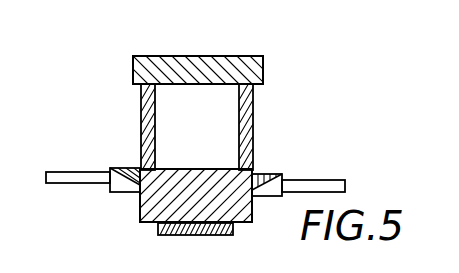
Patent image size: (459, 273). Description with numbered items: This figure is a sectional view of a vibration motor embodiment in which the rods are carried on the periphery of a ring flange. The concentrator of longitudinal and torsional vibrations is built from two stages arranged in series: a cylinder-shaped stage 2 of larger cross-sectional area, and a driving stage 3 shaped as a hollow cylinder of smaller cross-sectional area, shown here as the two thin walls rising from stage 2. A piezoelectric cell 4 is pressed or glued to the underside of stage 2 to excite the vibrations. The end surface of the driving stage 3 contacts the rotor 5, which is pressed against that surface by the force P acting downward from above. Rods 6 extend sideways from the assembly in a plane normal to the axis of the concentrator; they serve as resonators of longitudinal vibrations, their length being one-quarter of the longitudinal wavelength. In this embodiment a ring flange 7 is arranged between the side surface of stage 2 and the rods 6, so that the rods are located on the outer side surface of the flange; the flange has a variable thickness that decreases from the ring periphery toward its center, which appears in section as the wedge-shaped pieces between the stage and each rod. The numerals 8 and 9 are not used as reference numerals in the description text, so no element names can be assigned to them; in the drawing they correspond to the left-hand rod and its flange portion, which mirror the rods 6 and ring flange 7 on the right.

The force P is at (200, 22).
The rotor 5 is at (258, 72).
The driving stage 3 is at (253, 103).
The stage 2 is at (252, 214).
The piezoelectric cell 4 is at (233, 235).
The ring flange 7 is at (280, 174).
The rods 6 is at (327, 184).
The left shaft 8 is at (78, 177).
The left wedge 9 is at (125, 180).